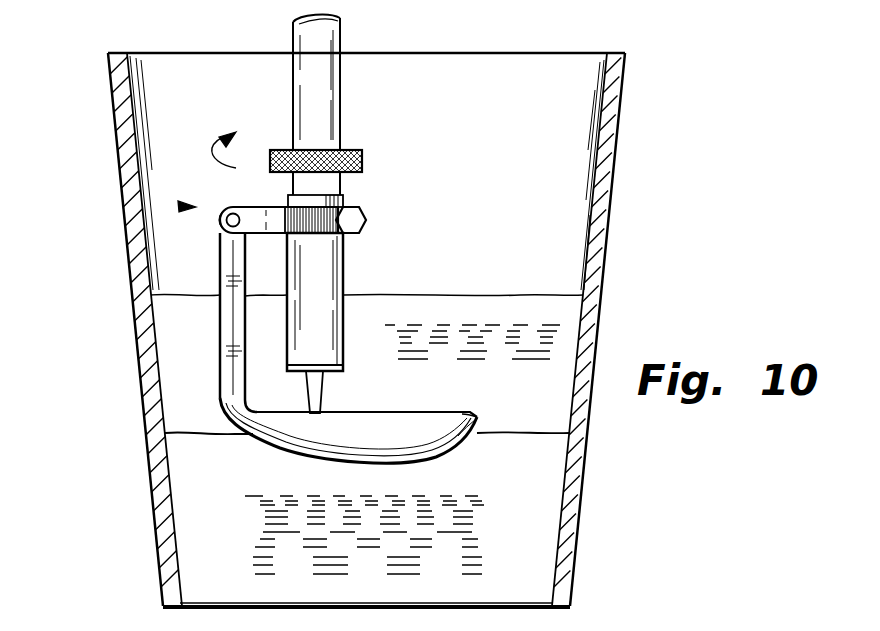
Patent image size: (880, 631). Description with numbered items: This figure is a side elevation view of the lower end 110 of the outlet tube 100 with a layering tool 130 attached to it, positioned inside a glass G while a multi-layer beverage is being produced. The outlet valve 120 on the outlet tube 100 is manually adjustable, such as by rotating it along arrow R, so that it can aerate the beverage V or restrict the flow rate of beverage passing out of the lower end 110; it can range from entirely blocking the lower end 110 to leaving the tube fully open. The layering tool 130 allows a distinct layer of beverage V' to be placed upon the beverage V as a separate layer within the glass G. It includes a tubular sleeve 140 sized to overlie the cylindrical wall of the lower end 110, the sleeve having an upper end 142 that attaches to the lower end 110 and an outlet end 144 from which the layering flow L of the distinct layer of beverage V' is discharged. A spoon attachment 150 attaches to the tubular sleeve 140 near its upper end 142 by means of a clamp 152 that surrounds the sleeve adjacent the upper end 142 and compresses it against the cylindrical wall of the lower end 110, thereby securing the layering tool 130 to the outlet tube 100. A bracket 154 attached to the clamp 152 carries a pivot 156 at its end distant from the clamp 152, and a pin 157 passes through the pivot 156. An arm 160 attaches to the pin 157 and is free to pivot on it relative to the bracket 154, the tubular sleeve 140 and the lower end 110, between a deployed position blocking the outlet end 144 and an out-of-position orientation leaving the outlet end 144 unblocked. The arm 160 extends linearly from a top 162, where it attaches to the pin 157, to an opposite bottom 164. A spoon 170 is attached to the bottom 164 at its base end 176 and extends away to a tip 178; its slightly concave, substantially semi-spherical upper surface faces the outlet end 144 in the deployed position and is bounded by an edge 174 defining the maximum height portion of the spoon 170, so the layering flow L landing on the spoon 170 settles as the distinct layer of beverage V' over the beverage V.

The outlet tube 100 is at (300, 43).
The lower end of outlet tube 110 is at (338, 182).
The outlet valve 120 is at (355, 150).
The layering tool 130 is at (182, 206).
The tubular sleeve 140 is at (343, 266).
The upper end of tubular sleeve 142 is at (343, 198).
The outlet end of tubular sleeve 144 is at (343, 358).
The spoon attachment 150 is at (224, 211).
The clamp 152 is at (367, 222).
The bracket 154 is at (253, 238).
The pivot 156 is at (222, 216).
The pin 157 is at (229, 208).
The arm 160 is at (227, 312).
The top of arm 162 is at (233, 257).
The bottom of arm 164 is at (240, 402).
The spoon 170 is at (335, 455).
The edge 174 is at (448, 414).
The base end 176 is at (258, 439).
The tip 178 is at (462, 432).
The glass G is at (614, 148).
The layering flow L is at (323, 385).
The arrow R is at (218, 153).
The beverage V is at (367, 503).
The distinct layer of beverage V' is at (405, 293).